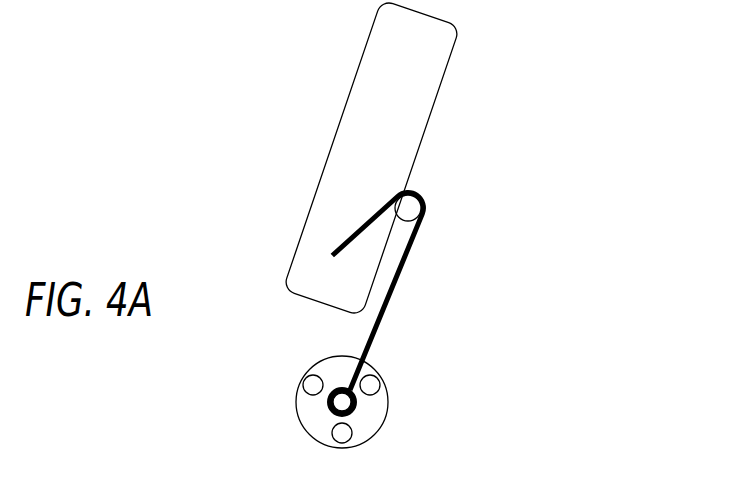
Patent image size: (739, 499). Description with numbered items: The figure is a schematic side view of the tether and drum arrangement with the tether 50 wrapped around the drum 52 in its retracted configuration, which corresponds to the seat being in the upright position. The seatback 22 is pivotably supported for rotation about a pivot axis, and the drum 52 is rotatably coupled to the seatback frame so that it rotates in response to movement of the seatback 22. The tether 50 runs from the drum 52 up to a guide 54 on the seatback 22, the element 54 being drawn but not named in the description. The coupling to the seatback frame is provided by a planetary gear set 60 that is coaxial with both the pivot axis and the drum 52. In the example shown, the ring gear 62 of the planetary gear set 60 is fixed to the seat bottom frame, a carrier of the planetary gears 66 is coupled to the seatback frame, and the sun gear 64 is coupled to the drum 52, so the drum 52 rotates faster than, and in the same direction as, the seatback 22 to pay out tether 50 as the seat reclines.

The seatback 22 is at (355, 77).
The tether 50 is at (388, 277).
The roller pin 54 is at (408, 208).
The planetary gear set 60 is at (341, 416).
The ring gear 62 is at (374, 434).
The drum 52 is at (355, 413).
The sun gear 64 is at (340, 403).
The planetary gears 66 is at (314, 384).